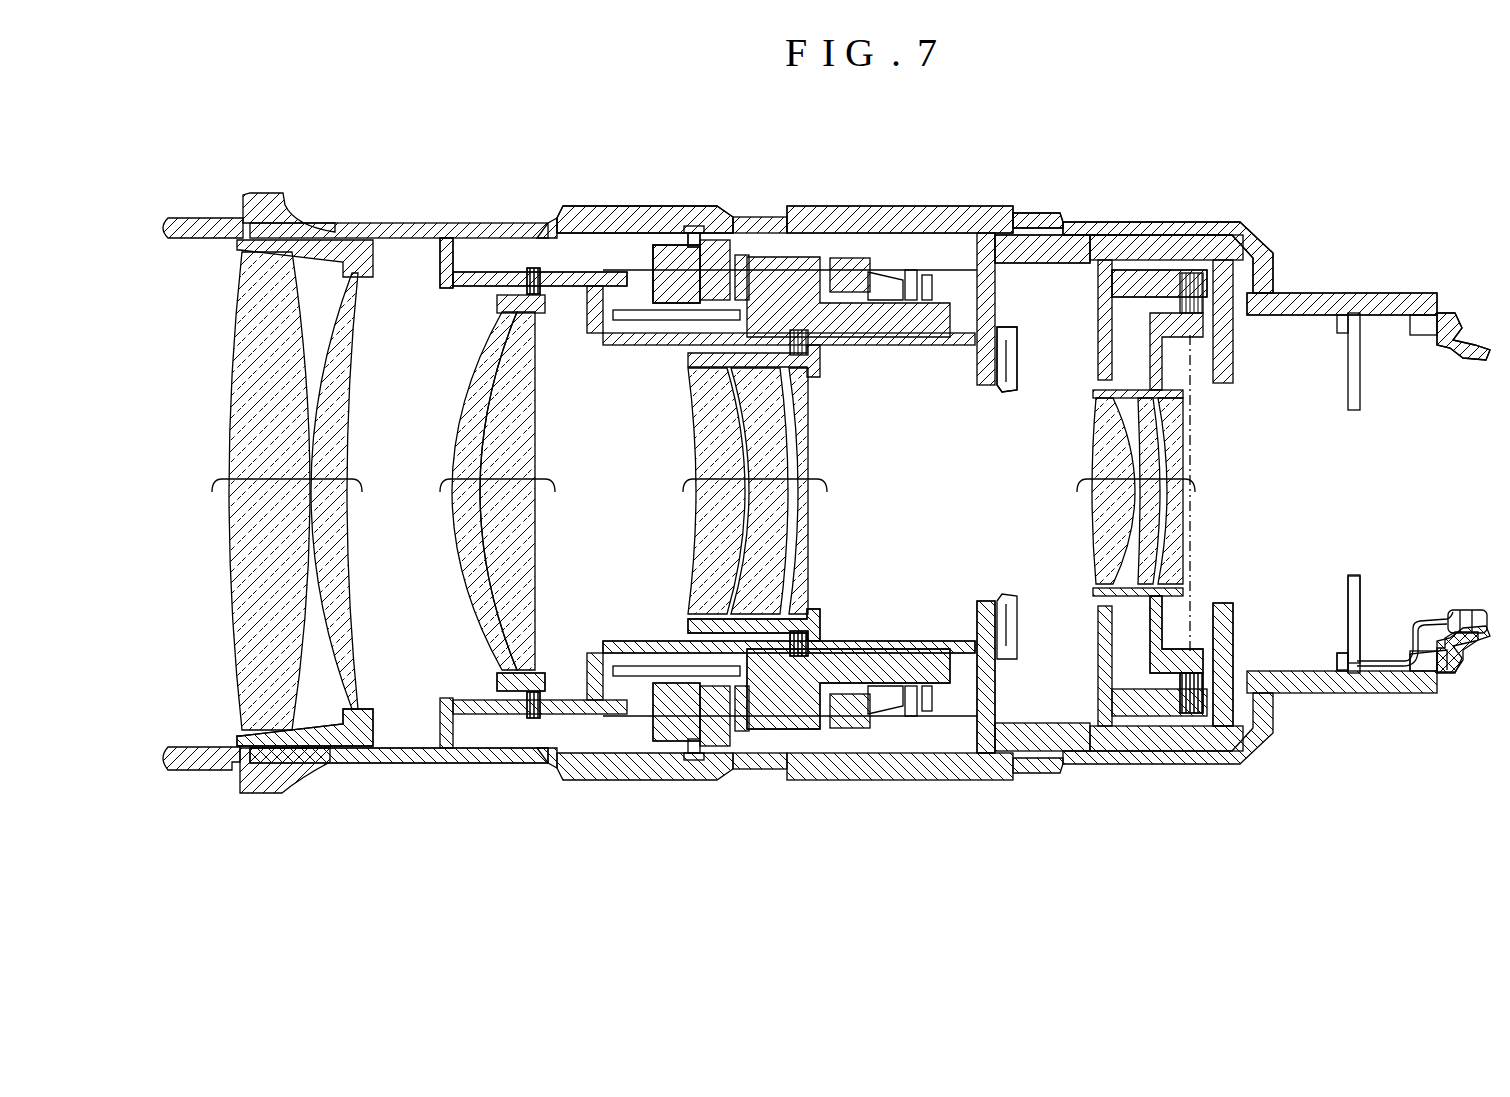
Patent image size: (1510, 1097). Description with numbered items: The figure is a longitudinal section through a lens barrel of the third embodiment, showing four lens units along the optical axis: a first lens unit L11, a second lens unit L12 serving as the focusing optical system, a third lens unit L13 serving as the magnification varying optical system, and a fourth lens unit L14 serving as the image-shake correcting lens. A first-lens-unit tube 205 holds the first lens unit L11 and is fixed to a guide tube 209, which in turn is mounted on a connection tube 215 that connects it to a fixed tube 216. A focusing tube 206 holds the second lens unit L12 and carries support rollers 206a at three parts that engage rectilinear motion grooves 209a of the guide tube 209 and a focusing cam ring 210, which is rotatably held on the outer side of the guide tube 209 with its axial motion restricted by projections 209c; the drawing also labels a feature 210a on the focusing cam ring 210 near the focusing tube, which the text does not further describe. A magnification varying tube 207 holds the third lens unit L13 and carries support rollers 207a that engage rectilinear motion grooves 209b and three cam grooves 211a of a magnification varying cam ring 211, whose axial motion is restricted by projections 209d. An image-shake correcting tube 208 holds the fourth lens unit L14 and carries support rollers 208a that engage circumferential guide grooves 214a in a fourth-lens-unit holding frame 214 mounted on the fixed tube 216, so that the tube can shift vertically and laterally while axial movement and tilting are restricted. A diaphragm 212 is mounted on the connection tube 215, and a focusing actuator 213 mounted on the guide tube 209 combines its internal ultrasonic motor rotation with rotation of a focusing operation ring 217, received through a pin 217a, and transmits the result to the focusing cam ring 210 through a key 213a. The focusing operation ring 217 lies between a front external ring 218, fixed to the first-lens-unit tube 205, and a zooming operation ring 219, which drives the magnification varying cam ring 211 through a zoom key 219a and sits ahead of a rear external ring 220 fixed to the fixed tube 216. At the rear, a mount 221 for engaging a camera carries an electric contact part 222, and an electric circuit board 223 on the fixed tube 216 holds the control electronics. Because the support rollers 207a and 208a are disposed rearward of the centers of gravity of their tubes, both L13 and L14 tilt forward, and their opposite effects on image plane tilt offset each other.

The first lens unit L11 is at (318, 455).
The second lens unit L12 is at (495, 458).
The third lens unit L13 is at (768, 470).
The fourth lens unit L14 is at (1140, 468).
The first-lens-unit tube 205 is at (303, 760).
The focusing tube 206 is at (505, 748).
The support rollers 206a is at (535, 748).
The magnification varying tube 207 is at (677, 748).
The support rollers 207a is at (780, 655).
The image-shake correcting tube 208 is at (1130, 645).
The support rollers 208a is at (1195, 645).
The guide tube 209 is at (418, 762).
The rectilinear motion grooves 209a is at (517, 272).
The rectilinear motion grooves 209b is at (850, 695).
The projections 209c is at (472, 262).
The projections 209d is at (715, 645).
The focusing cam ring 210 is at (620, 740).
The roller 210a is at (538, 268).
The magnification varying cam ring 211 is at (920, 705).
The cam grooves 211a is at (810, 275).
The diaphragm 212 is at (1008, 340).
The focusing actuator 213 is at (842, 277).
The key 213a is at (640, 300).
The fourth-lens-unit holding frame 214 is at (1135, 280).
The guide grooves 214a is at (1185, 635).
The connection tube 215 is at (1030, 748).
The fixed tube 216 is at (1310, 296).
The focusing operation ring 217 is at (633, 225).
The pin 217a is at (698, 228).
The front external ring 218 is at (292, 196).
The zooming operation ring 219 is at (1030, 222).
The zoom key 219a is at (948, 258).
The rear external ring 220 is at (1210, 226).
The mount 221 is at (1450, 312).
The electric contact part 222 is at (1485, 635).
The electric circuit board 223 is at (1352, 685).